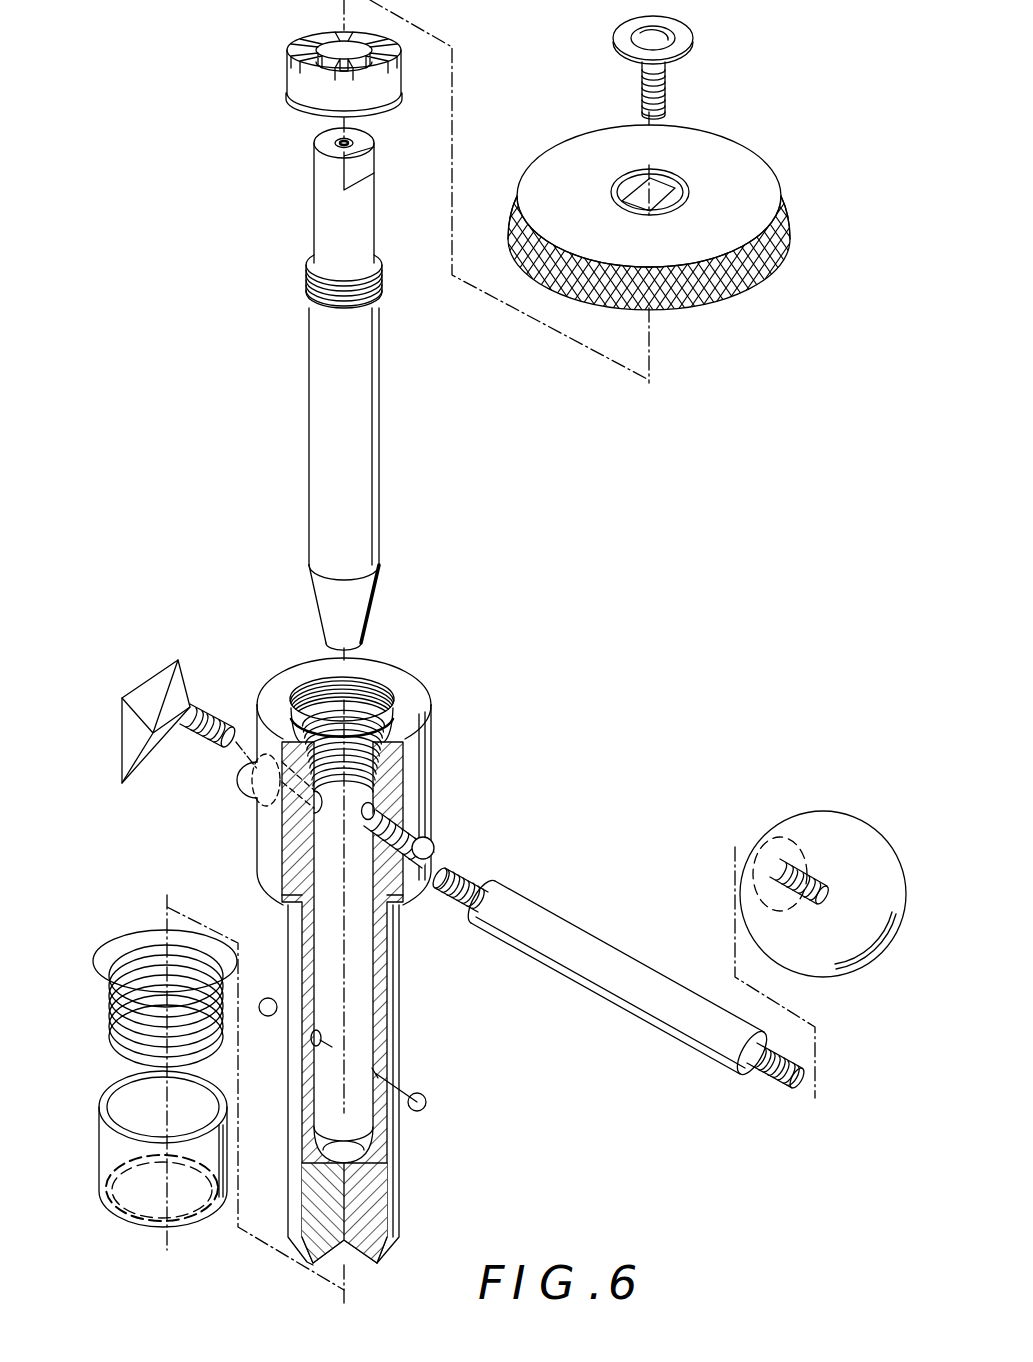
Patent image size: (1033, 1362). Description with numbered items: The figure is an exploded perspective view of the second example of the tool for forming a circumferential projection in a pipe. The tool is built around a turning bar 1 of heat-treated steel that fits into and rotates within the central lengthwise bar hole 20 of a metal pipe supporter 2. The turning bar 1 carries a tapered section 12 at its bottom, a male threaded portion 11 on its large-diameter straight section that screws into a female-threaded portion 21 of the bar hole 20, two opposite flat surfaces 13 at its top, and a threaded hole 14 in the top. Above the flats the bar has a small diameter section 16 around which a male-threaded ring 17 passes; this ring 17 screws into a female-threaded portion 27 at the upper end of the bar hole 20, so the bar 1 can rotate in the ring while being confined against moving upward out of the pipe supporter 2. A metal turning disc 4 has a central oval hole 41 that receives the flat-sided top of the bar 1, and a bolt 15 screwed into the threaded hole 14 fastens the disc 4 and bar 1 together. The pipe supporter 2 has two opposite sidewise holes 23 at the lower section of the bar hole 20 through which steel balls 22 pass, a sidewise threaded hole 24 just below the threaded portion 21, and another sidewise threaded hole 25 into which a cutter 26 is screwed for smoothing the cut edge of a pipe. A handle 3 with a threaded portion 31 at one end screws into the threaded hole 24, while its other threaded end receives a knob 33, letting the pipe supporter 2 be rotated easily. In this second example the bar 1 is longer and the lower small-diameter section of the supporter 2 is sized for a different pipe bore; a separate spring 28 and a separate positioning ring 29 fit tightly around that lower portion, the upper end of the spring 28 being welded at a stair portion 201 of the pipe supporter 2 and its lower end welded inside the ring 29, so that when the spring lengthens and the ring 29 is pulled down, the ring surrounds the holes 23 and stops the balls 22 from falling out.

The turning bar 1 is at (356, 418).
The threaded portion 11 is at (380, 290).
The tapered section 12 is at (362, 594).
The flat surfaces 13 is at (366, 162).
The threaded hole 14 is at (333, 146).
The small diameter section 16 is at (330, 210).
The male-threaded ring 17 is at (305, 52).
The bolt 15 is at (688, 38).
The turning disc 4 is at (782, 253).
The oval hole 41 is at (685, 185).
The pipe supporter 2 is at (416, 762).
The bar hole 20 is at (352, 744).
The female-threaded portion 21 is at (375, 824).
The steel balls 22 is at (268, 998).
The sidewise holes 23 is at (315, 1043).
The sidewise threaded hole 24 is at (432, 846).
The sidewise threaded hole 25 is at (250, 795).
The cutter 26 is at (178, 660).
The female-threaded portion 27 is at (384, 698).
The stair portion 201 is at (282, 905).
The handle 3 is at (575, 945).
The threaded portion 31 is at (462, 883).
The knob 33 is at (790, 828).
The spring 28 is at (125, 935).
The positioning ring 29 is at (194, 1198).